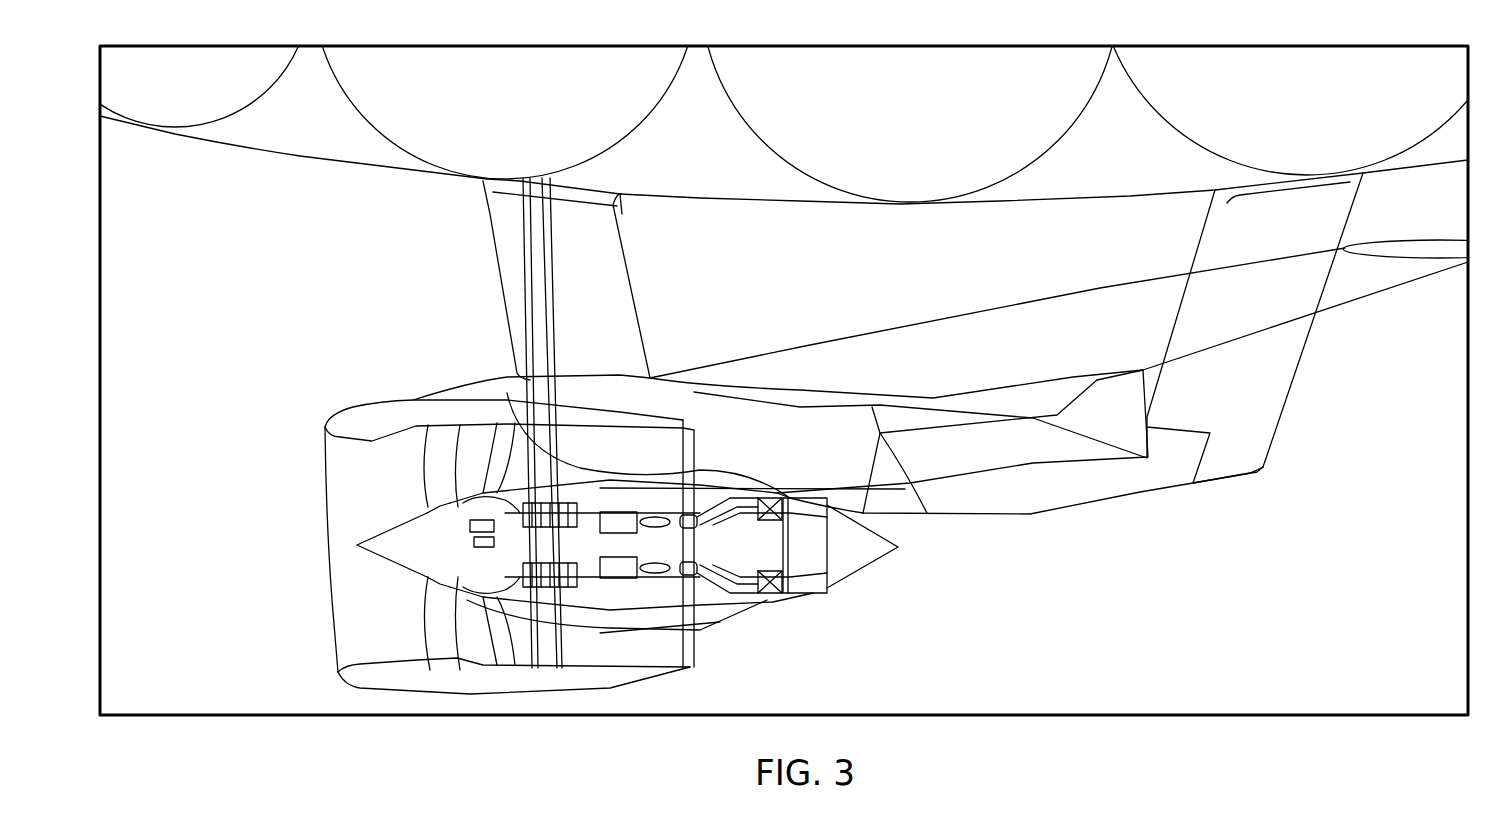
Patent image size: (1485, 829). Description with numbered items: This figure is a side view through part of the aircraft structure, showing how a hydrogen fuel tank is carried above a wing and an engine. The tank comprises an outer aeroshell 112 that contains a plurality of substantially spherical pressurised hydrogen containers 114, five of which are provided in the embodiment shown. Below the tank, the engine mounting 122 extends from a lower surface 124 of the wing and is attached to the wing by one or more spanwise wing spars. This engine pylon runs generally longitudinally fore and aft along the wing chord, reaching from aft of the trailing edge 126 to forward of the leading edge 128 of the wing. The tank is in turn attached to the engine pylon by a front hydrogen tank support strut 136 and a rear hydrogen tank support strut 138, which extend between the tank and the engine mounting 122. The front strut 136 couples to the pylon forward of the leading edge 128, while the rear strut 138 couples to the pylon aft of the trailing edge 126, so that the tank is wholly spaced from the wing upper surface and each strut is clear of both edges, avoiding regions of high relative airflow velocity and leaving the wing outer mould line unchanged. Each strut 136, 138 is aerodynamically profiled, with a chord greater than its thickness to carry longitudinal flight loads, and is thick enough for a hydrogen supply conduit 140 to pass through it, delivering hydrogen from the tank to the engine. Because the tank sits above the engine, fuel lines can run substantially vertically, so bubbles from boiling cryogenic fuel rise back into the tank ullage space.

The outer aeroshell 112 is at (1053, 188).
The pressurised hydrogen container 114 is at (812, 176).
The engine mounting 122 is at (1010, 490).
The lower surface 124 is at (927, 513).
The trailing edge 126 is at (1142, 363).
The leading edge 128 is at (702, 373).
The front hydrogen tank support strut 136 is at (495, 260).
The rear hydrogen tank support strut 138 is at (1300, 355).
The hydrogen supply conduit 140 is at (527, 310).